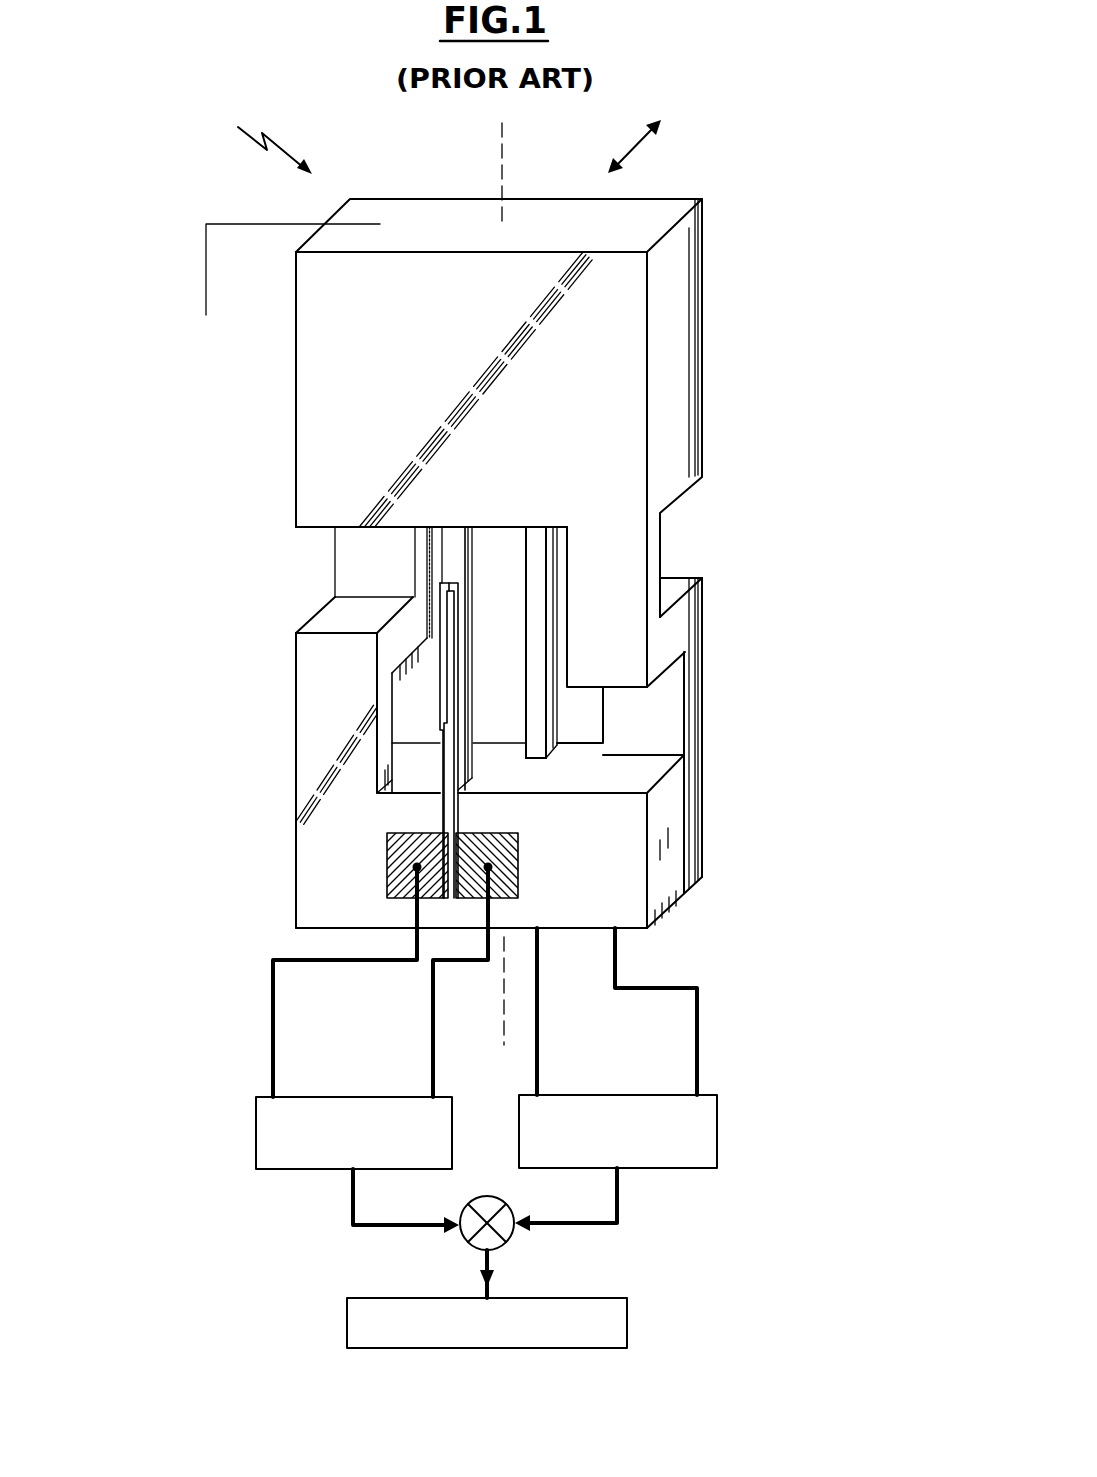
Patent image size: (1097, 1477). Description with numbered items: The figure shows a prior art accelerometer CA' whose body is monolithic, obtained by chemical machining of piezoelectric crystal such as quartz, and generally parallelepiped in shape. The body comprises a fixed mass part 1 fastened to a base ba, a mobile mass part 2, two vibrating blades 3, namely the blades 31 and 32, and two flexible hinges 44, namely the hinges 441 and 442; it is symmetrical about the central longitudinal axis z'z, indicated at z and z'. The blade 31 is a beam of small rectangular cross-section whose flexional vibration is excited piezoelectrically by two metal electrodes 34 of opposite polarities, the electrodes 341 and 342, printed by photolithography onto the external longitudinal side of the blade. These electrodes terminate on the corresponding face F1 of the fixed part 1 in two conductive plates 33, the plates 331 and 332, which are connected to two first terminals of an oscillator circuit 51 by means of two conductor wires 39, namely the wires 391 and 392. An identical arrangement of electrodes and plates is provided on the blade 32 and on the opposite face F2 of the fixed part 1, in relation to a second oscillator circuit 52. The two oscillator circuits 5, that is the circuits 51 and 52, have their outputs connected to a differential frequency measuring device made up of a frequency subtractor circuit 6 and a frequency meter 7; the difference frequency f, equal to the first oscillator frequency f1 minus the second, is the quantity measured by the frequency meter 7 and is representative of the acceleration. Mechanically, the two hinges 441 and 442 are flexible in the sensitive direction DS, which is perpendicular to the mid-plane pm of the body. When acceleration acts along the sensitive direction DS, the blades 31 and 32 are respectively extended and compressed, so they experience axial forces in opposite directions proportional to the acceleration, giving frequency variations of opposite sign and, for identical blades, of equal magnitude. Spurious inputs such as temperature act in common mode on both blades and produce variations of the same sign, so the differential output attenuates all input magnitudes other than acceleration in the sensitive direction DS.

The fixed mass part 1 is at (680, 780).
The mobile mass part 2 is at (677, 333).
The vibrating blades 3 is at (499, 658).
The vibrating blade 31 is at (465, 633).
The vibrating blade 32 is at (533, 650).
The conductive plates 33 is at (458, 865).
The conductive plate 331 is at (395, 857).
The conductive plate 332 is at (510, 878).
The metal electrodes 34 is at (437, 740).
The metal electrode 341 is at (448, 812).
The metal electrode 342 is at (458, 822).
The conductor wires 39 is at (339, 982).
The conductor wire 391 is at (273, 1007).
The conductor wire 392 is at (433, 1057).
The flexible hinges 44 is at (506, 571).
The flexible hinge 441 is at (314, 579).
The flexible hinge 442 is at (691, 546).
The oscillator circuits 5 is at (482, 1132).
The oscillator circuit 51 is at (256, 1113).
The oscillator circuit 52 is at (717, 1137).
The frequency subtractor circuit 6 is at (483, 1205).
The frequency meter 7 is at (628, 1322).
The mid-plane pm is at (237, 235).
The base ba is at (265, 933).
The face F1 is at (600, 912).
The face F2 is at (660, 836).
The sensitive direction DS is at (637, 150).
The accelerometer CA' is at (254, 136).
The central longitudinal axis z is at (510, 173).
The central longitudinal axis z' is at (491, 991).
The frequency f1 is at (353, 1188).
The differential output frequency f is at (488, 1262).